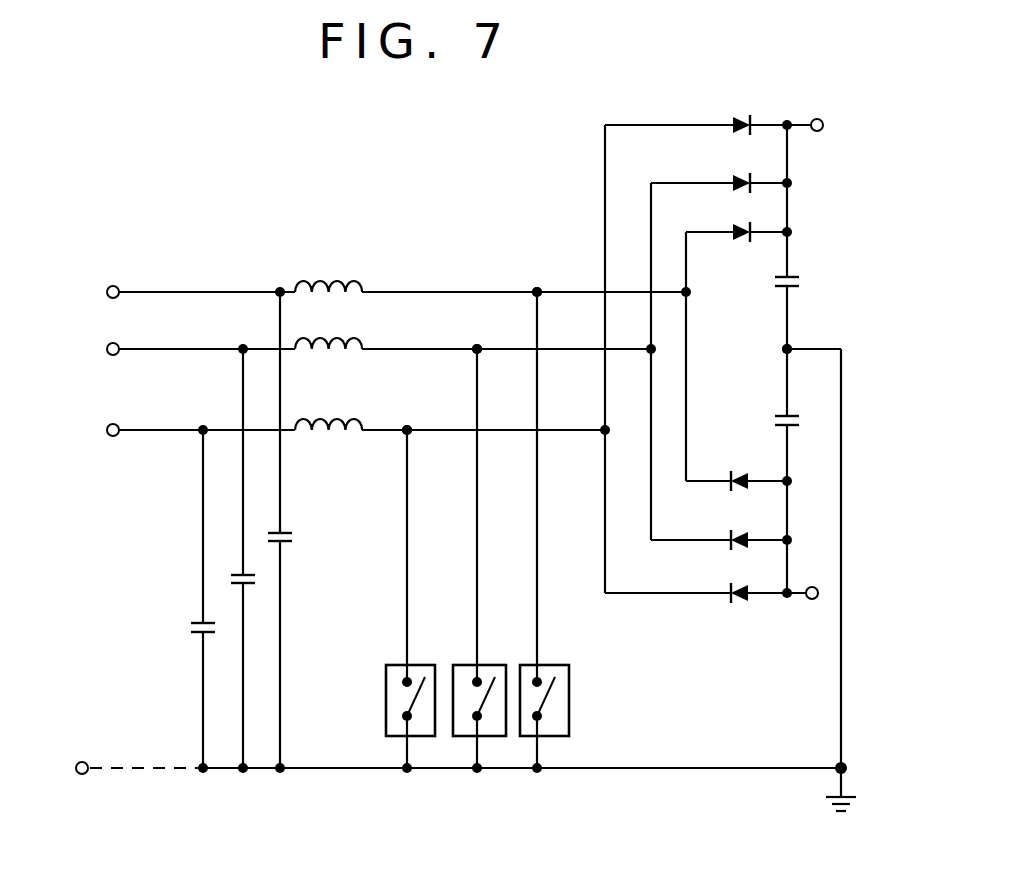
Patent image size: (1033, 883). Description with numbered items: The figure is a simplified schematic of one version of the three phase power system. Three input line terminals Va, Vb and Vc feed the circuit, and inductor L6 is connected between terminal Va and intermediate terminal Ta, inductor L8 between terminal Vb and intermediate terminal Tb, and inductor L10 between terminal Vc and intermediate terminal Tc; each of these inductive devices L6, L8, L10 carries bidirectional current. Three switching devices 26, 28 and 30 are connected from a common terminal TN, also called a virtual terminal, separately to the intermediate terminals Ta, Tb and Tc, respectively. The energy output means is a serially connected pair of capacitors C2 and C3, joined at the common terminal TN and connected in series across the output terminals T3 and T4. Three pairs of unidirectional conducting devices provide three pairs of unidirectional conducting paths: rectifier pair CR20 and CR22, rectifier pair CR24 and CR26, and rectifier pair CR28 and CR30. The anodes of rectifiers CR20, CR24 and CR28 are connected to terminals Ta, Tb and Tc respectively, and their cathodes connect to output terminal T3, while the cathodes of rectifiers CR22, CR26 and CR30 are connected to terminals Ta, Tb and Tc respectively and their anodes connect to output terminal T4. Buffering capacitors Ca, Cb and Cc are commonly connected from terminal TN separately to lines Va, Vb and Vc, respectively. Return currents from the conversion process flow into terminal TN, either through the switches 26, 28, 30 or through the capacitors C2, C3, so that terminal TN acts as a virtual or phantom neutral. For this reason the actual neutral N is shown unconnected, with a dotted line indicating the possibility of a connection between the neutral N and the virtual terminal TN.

The phase A input terminal Va is at (87, 296).
The phase B input terminal Vb is at (87, 353).
The phase C input terminal Vc is at (87, 436).
The actual neutral N is at (64, 771).
The inductor L6 is at (368, 246).
The inductor L8 is at (360, 314).
The inductor L10 is at (362, 396).
The intermediate terminal Ta is at (551, 253).
The intermediate terminal Tb is at (479, 347).
The intermediate terminal Tc is at (406, 427).
The buffering capacitor Ca is at (294, 538).
The buffering capacitor Cb is at (258, 579).
The buffering capacitor Cc is at (190, 628).
The capacitor C2 is at (802, 284).
The capacitor C3 is at (775, 421).
The rectifier CR20 is at (748, 224).
The rectifier CR22 is at (762, 464).
The rectifier CR24 is at (744, 174).
The rectifier CR26 is at (736, 536).
The rectifier CR28 is at (756, 98).
The rectifier CR30 is at (735, 587).
The output terminal T3 is at (837, 127).
The output terminal T4 is at (810, 614).
The common terminal TN is at (787, 347).
The switching device 26 is at (551, 665).
The switching device 28 is at (461, 665).
The switching device 30 is at (386, 694).